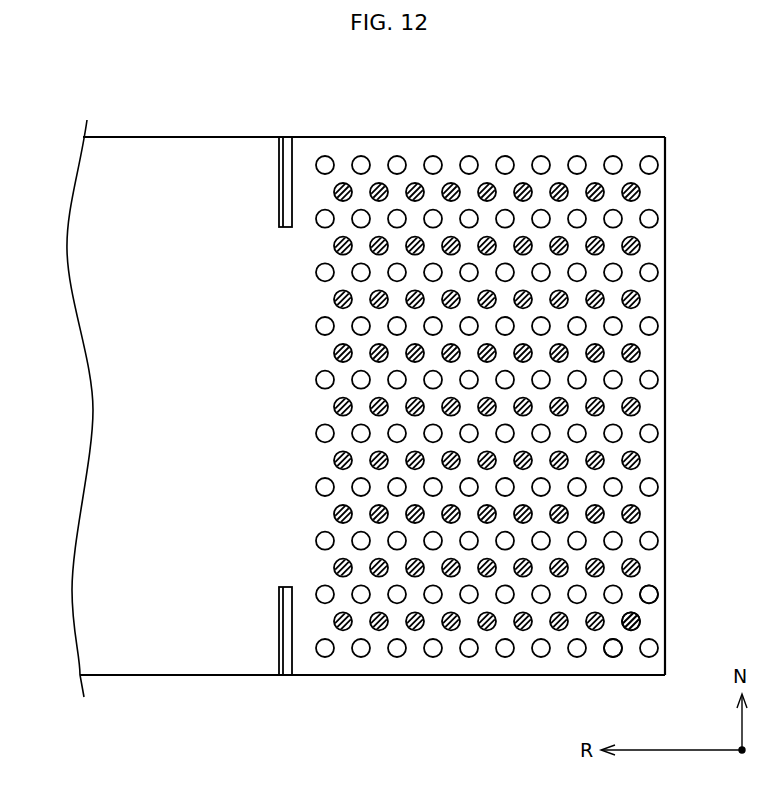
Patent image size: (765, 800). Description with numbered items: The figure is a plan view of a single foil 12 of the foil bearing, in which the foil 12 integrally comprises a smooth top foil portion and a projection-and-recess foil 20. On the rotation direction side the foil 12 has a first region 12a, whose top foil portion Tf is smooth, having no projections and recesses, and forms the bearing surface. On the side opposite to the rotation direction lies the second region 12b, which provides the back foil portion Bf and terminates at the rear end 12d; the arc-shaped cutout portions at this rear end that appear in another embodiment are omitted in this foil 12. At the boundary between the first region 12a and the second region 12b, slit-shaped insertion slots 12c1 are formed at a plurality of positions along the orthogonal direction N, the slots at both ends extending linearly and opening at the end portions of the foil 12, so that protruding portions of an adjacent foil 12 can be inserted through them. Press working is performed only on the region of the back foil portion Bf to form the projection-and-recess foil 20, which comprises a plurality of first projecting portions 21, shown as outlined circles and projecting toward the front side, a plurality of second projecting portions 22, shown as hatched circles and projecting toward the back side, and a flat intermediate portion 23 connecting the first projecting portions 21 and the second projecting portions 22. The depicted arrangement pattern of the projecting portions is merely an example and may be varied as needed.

The foil 12 is at (344, 697).
The first region 12a is at (149, 160).
The second region 12b is at (488, 157).
The insertion slot 12c1 is at (279, 173).
The rear end 12d is at (665, 250).
The projection-and-recess foil 20 is at (667, 420).
The first projecting portion 21 is at (613, 650).
The second projecting portion 22 is at (640, 621).
The intermediate portion 23 is at (632, 593).